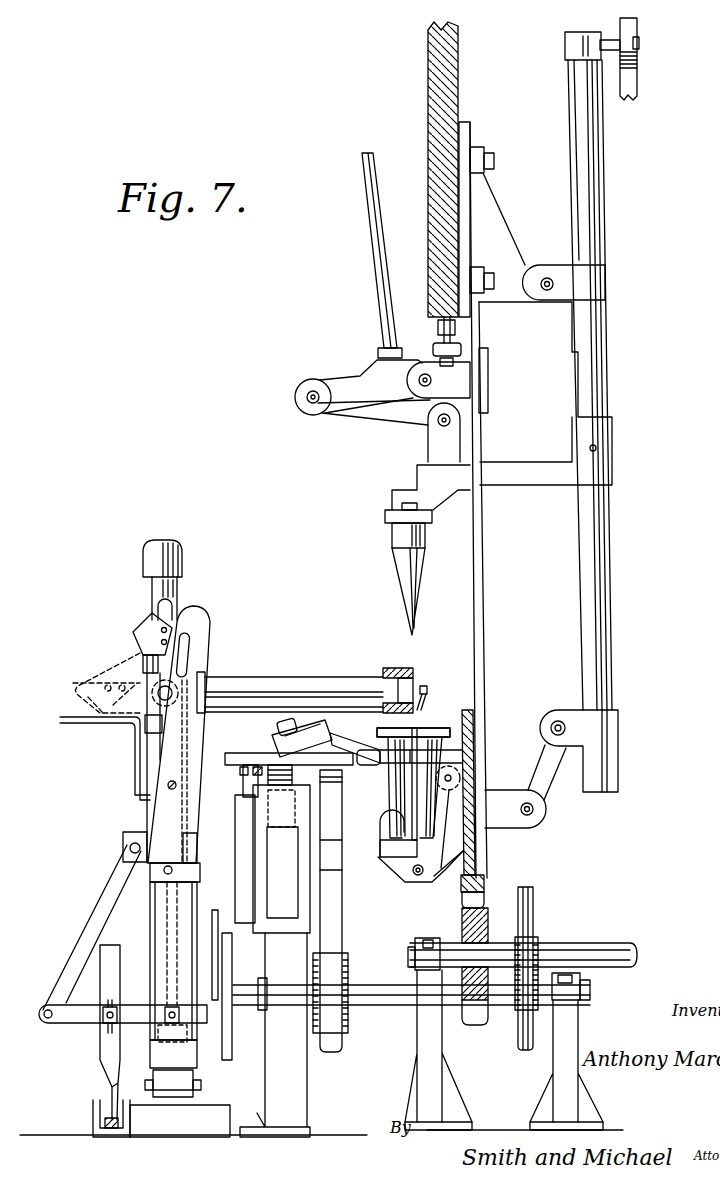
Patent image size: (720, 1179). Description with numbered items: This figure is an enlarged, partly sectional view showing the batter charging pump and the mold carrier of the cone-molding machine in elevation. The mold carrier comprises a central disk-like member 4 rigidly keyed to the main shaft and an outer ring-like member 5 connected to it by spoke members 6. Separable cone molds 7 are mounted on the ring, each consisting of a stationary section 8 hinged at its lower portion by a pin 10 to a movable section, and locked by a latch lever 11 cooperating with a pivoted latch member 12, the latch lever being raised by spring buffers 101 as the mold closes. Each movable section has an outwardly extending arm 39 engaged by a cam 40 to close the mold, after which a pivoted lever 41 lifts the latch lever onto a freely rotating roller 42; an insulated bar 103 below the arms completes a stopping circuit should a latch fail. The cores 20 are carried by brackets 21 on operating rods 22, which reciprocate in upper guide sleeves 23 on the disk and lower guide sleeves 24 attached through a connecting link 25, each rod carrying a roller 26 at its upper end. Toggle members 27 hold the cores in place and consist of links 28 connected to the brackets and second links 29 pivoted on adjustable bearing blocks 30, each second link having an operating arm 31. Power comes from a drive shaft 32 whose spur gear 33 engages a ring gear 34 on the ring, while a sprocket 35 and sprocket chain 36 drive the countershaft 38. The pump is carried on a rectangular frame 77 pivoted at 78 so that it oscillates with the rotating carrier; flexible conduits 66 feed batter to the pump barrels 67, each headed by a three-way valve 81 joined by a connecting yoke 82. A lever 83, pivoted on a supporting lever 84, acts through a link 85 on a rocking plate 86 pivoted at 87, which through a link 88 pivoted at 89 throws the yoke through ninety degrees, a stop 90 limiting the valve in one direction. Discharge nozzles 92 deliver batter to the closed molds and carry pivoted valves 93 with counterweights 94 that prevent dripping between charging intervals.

The disk-like member 4 is at (458, 88).
The roller 26 is at (635, 26).
The operating rod or arm 31 is at (367, 210).
The toggle members 27 is at (339, 358).
The second links 29 is at (371, 386).
The bearing blocks 30 is at (443, 380).
The links 28 is at (401, 410).
The upper guide sleeves 23 is at (598, 287).
The brackets 21 is at (545, 393).
The core members 20 is at (400, 571).
The spoke members 6 is at (483, 584).
The operating rods 22 is at (607, 580).
The flexible conduits 66 is at (180, 592).
The link 88 is at (197, 620).
The connecting yoke 82 is at (140, 632).
The three-way valve 81 is at (148, 680).
The stop 90 is at (125, 683).
The discharge nozzles 92 is at (283, 680).
The counterweight 94 is at (423, 686).
The pivoted valve 93 is at (422, 707).
The ring-like member 5 is at (472, 712).
The pump barrels 67 is at (160, 746).
The arm 39 is at (235, 754).
The roller 42 is at (293, 760).
The latch member 12 is at (366, 750).
The lower guide sleeves 24 is at (608, 756).
The rod or bar 103 is at (239, 772).
The cam 40 is at (248, 780).
The latch lever 11 is at (380, 768).
The cone molds 7 is at (376, 803).
The spring buffers 101 is at (379, 822).
The pivot 89 is at (167, 784).
The connecting link 25 is at (546, 791).
The rocking plate 86 is at (198, 852).
The pivot 87 is at (173, 870).
The pin or pintles 10 is at (413, 873).
The stationary section 8 is at (437, 872).
The ring gear 34 is at (485, 878).
The link 85 is at (95, 906).
The lever 41 is at (333, 917).
The spur gear 33 is at (461, 916).
The sprocket chain 36 is at (534, 912).
The sprocket 35 is at (540, 938).
The drive shaft 32 is at (620, 942).
The supporting lever 84 is at (105, 965).
The countershaft 38 is at (374, 984).
The lever 83 is at (86, 1023).
The pivot 78 is at (116, 1100).
The rectangular frame 77 is at (178, 1050).